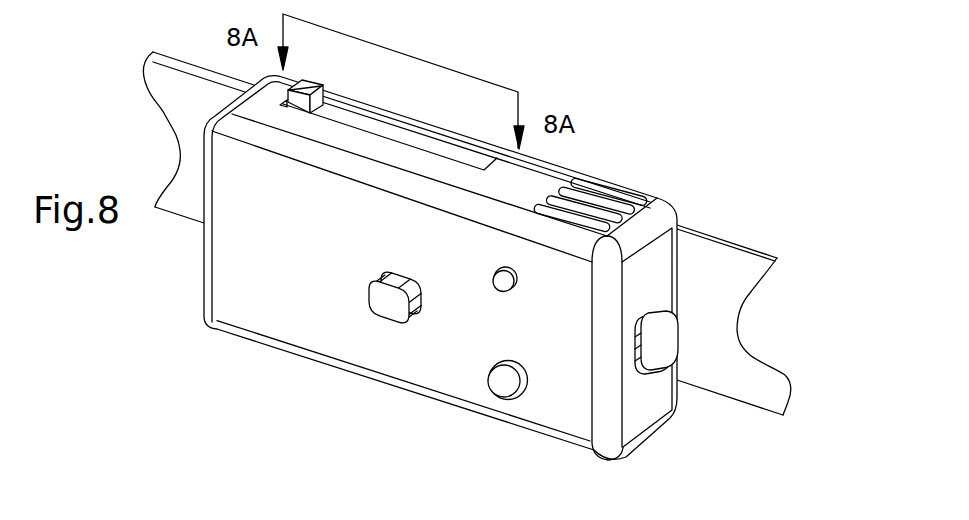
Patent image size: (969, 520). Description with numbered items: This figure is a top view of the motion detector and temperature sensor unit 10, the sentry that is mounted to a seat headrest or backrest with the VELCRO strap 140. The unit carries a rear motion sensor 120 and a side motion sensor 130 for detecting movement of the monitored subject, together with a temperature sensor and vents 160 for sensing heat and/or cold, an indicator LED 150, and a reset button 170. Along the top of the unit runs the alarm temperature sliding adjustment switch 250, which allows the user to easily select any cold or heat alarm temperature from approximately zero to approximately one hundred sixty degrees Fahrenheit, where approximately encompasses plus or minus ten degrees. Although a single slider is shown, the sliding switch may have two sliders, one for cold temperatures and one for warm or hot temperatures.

The motion detector and temperature sensor unit 10 is at (643, 143).
The rear motion sensor 120 is at (390, 308).
The side motion sensor 130 is at (670, 343).
The VELCRO strap 140 is at (720, 268).
The indicator LED 150 is at (500, 272).
The temperature sensor and vents 160 is at (605, 206).
The reset button 170 is at (502, 382).
The alarm temperature sliding adjustment switch 250 is at (302, 92).